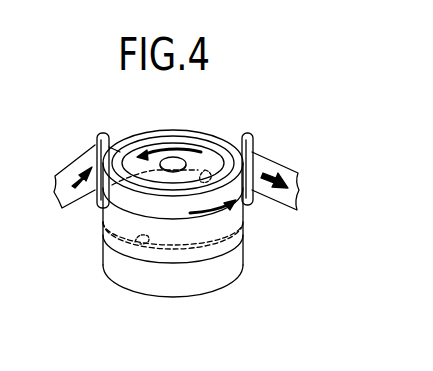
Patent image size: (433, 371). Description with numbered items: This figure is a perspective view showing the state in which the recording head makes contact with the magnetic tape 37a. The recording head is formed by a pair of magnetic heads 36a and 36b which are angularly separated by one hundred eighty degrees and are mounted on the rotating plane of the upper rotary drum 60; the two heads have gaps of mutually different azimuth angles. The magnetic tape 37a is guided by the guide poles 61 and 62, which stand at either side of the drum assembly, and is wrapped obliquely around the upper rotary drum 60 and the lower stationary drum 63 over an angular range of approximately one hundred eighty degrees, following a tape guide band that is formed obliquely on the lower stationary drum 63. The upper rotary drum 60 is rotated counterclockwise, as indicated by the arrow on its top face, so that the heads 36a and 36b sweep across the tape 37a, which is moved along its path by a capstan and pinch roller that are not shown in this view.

The upper rotary drum 60 is at (159, 137).
The guide pole 61 is at (100, 140).
The guide pole 62 is at (253, 133).
The lower stationary drum 63 is at (200, 286).
The magnetic head 36a is at (207, 168).
The magnetic head 36b is at (140, 240).
The magnetic tape 37a is at (289, 169).